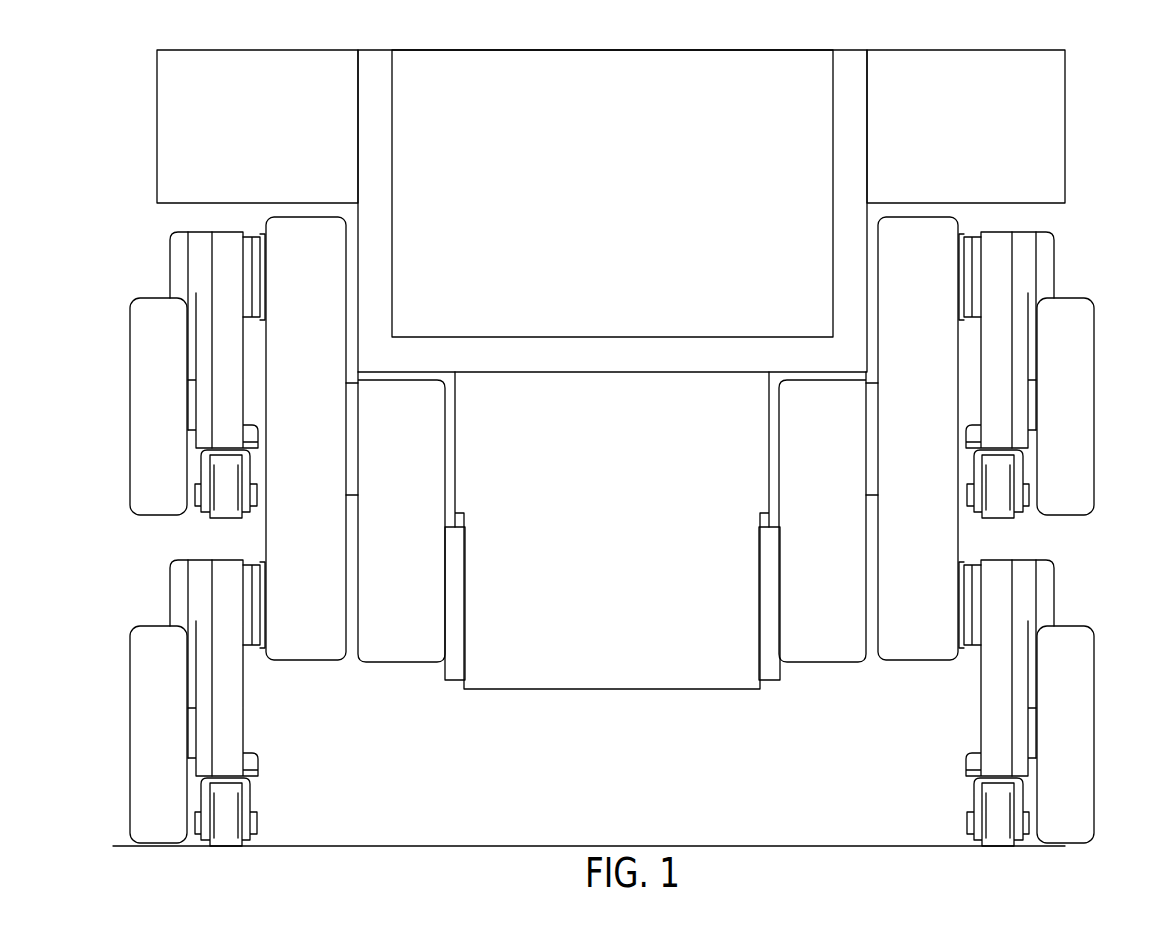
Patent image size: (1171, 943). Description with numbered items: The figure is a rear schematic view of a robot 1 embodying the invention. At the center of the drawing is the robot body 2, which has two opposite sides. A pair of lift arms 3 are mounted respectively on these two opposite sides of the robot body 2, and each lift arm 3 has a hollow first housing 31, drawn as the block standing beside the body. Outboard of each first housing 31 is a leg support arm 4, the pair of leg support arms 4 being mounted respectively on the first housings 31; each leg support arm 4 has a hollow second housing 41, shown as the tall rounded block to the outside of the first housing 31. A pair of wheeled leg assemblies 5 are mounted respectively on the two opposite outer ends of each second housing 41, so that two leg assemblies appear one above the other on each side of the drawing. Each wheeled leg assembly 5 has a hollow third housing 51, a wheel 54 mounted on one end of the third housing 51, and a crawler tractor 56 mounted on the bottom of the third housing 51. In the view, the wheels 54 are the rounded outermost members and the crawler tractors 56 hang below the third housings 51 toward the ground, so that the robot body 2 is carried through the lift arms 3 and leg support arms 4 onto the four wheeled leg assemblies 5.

The robot 1 is at (1104, 191).
The robot body 2 is at (634, 690).
The lift arm 3 is at (385, 667).
The first housing 31 is at (415, 663).
The leg support arm 4 is at (308, 667).
The second housing 41 is at (331, 661).
The wheeled leg assembly 5 is at (163, 279).
The third housing 51 is at (222, 268).
The wheel 54 is at (133, 471).
The crawler tractor 56 is at (222, 515).